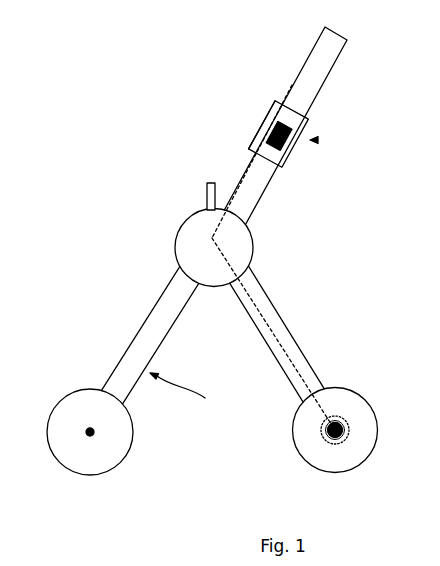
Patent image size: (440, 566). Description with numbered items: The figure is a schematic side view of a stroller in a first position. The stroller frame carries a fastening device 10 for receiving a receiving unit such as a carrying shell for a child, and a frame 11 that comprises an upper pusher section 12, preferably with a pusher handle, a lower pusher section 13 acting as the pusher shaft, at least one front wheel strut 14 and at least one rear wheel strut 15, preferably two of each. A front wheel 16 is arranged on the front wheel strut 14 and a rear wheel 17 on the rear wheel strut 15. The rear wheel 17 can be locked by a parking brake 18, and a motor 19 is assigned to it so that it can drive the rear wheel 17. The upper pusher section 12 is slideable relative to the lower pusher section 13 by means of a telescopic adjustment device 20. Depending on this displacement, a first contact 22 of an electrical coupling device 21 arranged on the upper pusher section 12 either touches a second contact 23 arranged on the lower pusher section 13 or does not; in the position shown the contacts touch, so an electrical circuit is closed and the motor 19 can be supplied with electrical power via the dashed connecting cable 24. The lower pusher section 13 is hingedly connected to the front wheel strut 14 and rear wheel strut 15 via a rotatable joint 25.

The fastening device 10 is at (206, 192).
The frame 11 is at (188, 390).
The upper pusher section 12 is at (312, 68).
The lower pusher section 13 is at (244, 172).
The front wheel strut 14 is at (143, 332).
The rear wheel strut 15 is at (288, 385).
The front wheel 16 is at (90, 388).
The rear wheel 17 is at (328, 463).
The parking brake 18 is at (325, 439).
The motor 19 is at (322, 427).
The adjustment device 20 is at (314, 140).
The coupling device 21 is at (291, 149).
The first contact 22 is at (265, 130).
The second contact 23 is at (272, 122).
The connecting cable 24 is at (268, 342).
The rotatable joint 25 is at (190, 236).